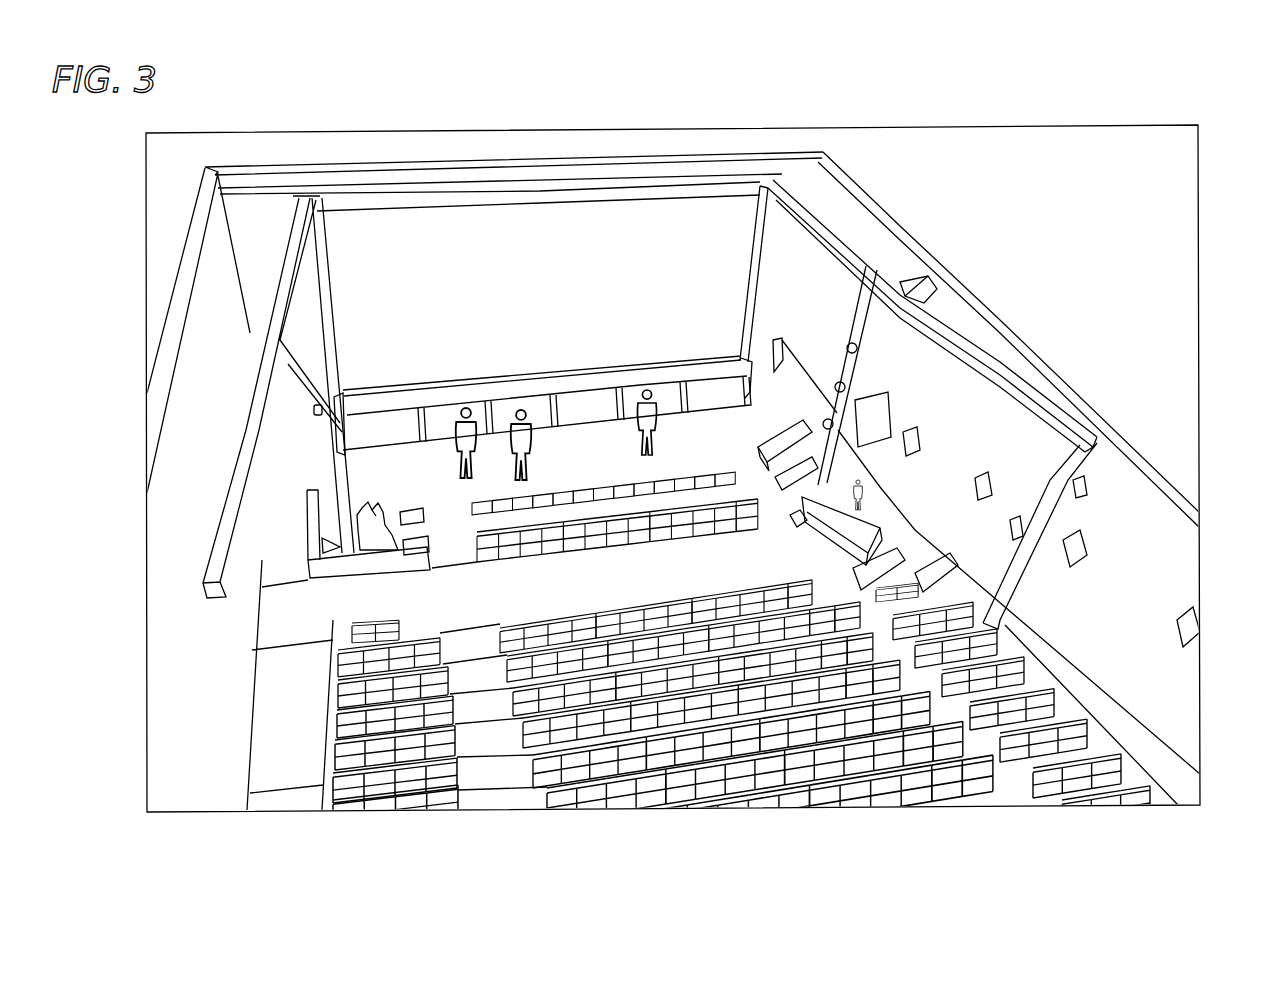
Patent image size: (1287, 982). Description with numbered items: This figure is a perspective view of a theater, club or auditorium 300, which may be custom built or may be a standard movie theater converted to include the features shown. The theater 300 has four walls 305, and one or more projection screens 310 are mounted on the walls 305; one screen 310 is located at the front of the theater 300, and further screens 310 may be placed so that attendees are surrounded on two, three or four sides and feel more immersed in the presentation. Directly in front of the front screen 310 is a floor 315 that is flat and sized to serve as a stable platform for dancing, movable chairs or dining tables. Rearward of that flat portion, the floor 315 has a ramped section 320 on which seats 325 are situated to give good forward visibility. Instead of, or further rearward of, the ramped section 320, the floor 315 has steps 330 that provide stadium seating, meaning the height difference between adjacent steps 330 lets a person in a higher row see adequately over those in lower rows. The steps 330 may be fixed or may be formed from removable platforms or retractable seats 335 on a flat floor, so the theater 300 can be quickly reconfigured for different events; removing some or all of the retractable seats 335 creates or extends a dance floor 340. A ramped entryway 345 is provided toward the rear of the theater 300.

The theater 300 is at (370, 103).
The walls 305 is at (800, 178).
The projection screen 310 is at (418, 238).
The floor 315 is at (387, 472).
The ramped section 320 is at (383, 587).
The seats 325 is at (407, 753).
The steps 330 is at (497, 743).
The retractable seats 335 is at (787, 785).
The dance floor 340 is at (675, 450).
The ramped entryway 345 is at (277, 742).